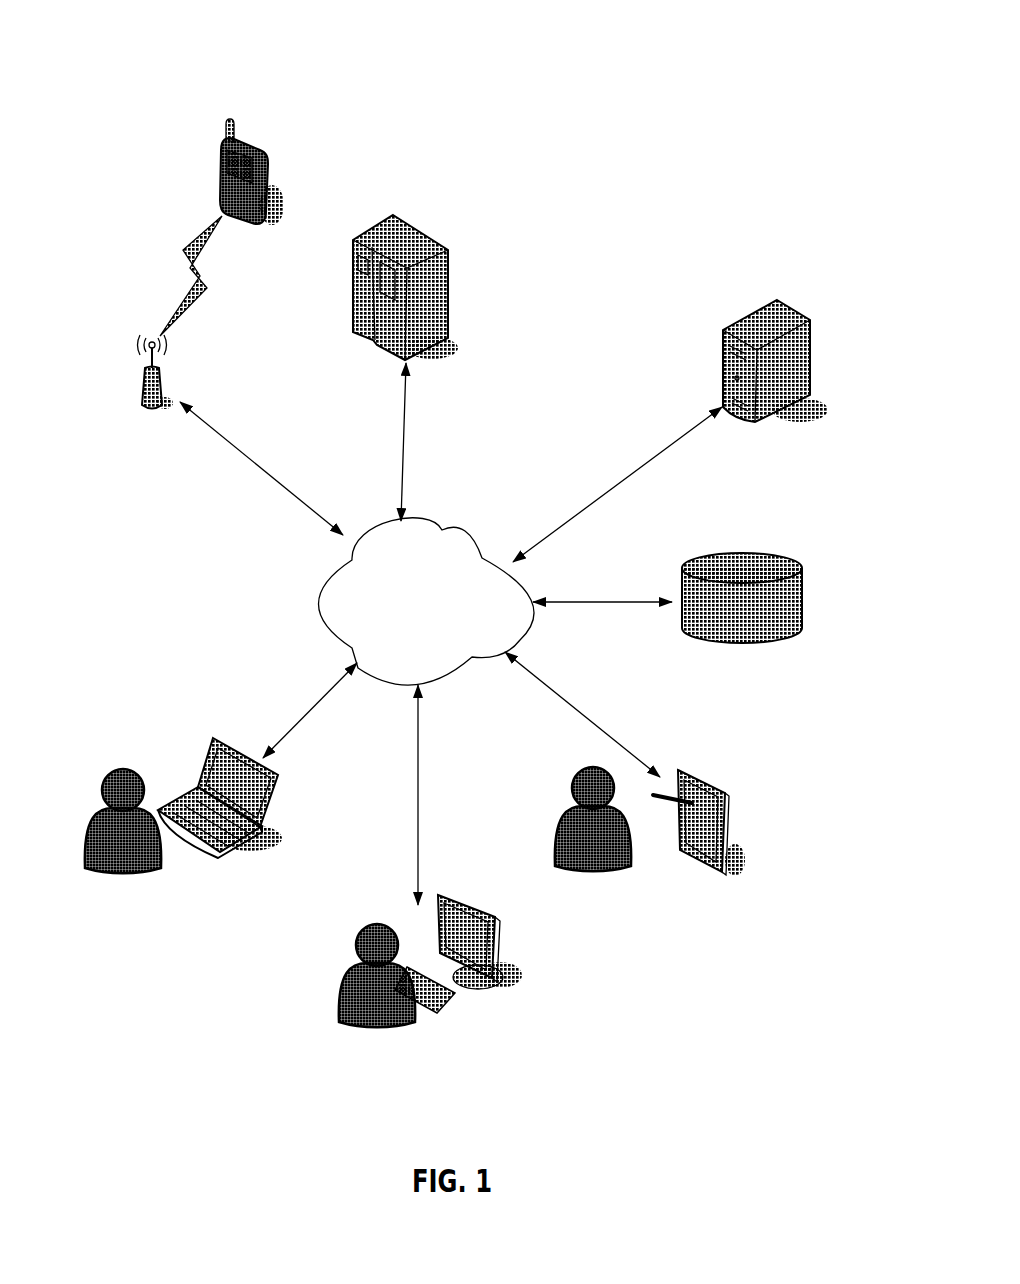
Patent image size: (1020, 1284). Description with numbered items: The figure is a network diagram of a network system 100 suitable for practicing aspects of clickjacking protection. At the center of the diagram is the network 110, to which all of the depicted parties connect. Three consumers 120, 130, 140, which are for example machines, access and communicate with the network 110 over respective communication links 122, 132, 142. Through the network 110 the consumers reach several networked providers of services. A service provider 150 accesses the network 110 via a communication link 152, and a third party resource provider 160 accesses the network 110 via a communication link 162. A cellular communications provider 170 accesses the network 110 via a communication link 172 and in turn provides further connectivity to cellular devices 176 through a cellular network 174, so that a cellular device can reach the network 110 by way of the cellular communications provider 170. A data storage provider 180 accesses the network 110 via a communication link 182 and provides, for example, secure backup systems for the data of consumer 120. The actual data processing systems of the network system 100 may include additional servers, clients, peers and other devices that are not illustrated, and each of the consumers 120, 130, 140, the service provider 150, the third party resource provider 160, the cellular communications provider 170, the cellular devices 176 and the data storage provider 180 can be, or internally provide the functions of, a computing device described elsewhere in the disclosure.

The network system 100 is at (623, 82).
The network 110 is at (407, 627).
The consumer 120 is at (203, 755).
The communication link 122 is at (305, 712).
The consumer 130 is at (498, 935).
The communication link 132 is at (423, 812).
The consumer 140 is at (717, 780).
The communication link 142 is at (603, 723).
The service provider 150 is at (445, 245).
The communication link 152 is at (403, 403).
The third party resource provider 160 is at (747, 313).
The communication link 162 is at (613, 483).
The cellular communications provider 170 is at (133, 327).
The communication link 172 is at (290, 485).
The cellular network 174 is at (208, 287).
The cellular devices 176 is at (257, 143).
The data storage provider 180 is at (767, 553).
The communication link 182 is at (598, 600).